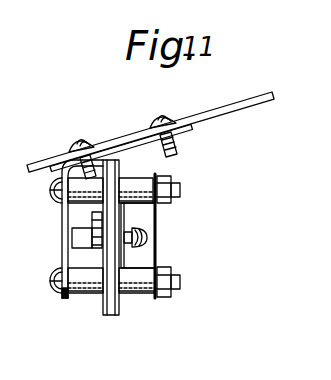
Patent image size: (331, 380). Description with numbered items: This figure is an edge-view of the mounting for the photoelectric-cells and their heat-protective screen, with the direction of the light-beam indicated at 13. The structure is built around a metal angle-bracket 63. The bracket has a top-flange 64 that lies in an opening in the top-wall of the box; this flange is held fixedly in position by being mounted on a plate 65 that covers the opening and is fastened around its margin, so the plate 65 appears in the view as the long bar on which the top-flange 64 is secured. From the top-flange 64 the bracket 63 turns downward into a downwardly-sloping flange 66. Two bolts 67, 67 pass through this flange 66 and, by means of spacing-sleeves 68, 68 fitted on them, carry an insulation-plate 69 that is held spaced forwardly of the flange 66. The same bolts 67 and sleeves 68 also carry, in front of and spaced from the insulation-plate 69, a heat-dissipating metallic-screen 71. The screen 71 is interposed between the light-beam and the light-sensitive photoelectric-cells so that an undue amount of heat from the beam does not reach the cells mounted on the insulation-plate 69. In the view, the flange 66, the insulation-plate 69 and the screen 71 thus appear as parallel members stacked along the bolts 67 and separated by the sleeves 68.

The direction of movement 13 is at (131, 155).
The angle-bracket 63 is at (63, 224).
The top-flange 64 is at (181, 129).
The plate 65 is at (226, 109).
The downwardly-sloping flange 66 is at (63, 293).
The bolts 67 is at (181, 190).
The spacing-sleeves 68 is at (133, 184).
The insulation-plate 69 is at (113, 301).
The heat-dissipating metallic-screen 71 is at (157, 230).